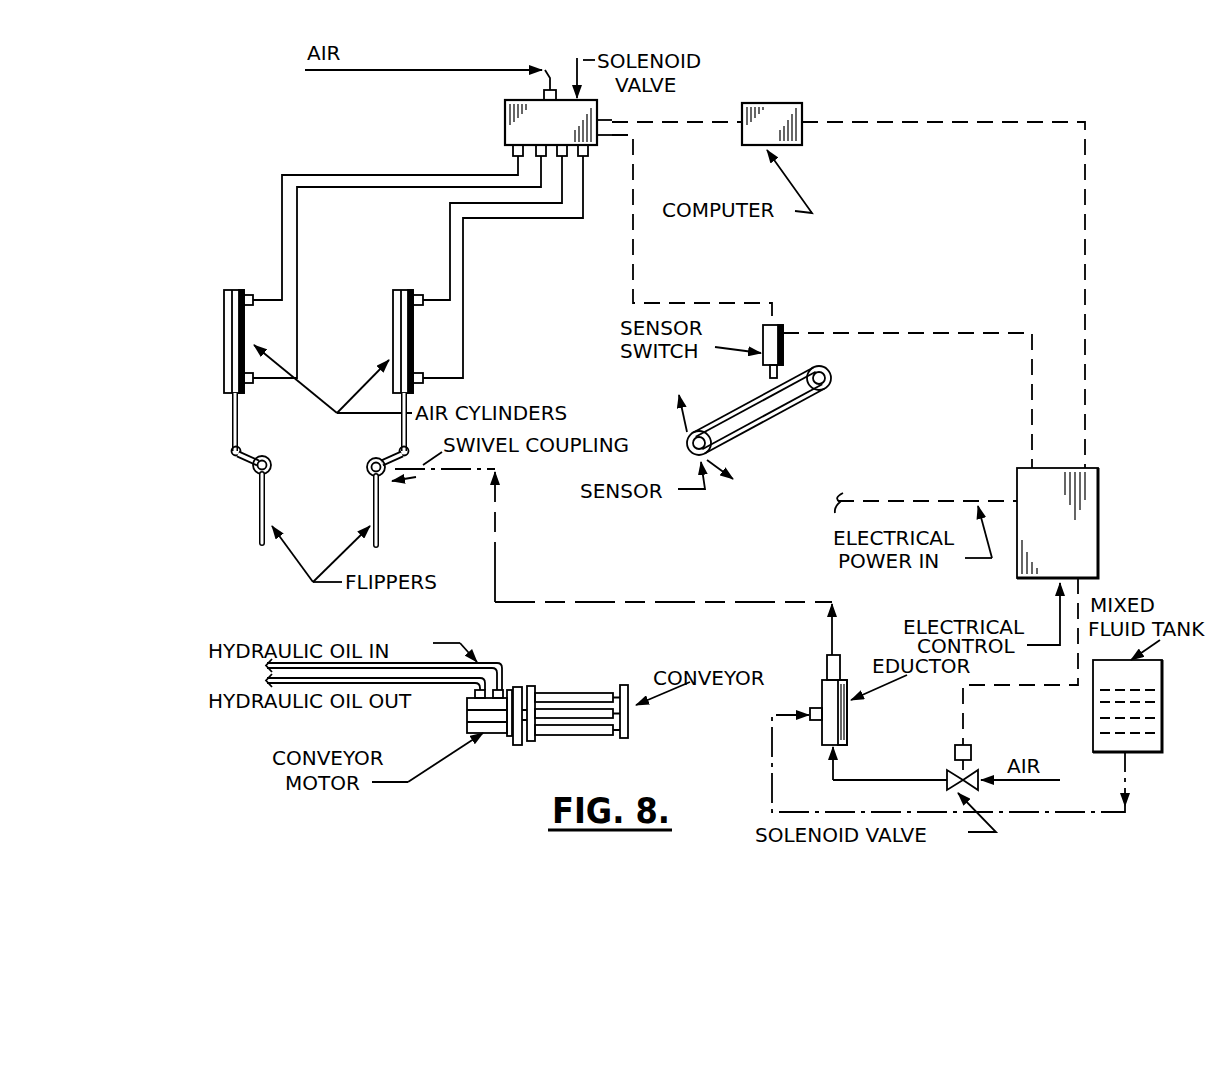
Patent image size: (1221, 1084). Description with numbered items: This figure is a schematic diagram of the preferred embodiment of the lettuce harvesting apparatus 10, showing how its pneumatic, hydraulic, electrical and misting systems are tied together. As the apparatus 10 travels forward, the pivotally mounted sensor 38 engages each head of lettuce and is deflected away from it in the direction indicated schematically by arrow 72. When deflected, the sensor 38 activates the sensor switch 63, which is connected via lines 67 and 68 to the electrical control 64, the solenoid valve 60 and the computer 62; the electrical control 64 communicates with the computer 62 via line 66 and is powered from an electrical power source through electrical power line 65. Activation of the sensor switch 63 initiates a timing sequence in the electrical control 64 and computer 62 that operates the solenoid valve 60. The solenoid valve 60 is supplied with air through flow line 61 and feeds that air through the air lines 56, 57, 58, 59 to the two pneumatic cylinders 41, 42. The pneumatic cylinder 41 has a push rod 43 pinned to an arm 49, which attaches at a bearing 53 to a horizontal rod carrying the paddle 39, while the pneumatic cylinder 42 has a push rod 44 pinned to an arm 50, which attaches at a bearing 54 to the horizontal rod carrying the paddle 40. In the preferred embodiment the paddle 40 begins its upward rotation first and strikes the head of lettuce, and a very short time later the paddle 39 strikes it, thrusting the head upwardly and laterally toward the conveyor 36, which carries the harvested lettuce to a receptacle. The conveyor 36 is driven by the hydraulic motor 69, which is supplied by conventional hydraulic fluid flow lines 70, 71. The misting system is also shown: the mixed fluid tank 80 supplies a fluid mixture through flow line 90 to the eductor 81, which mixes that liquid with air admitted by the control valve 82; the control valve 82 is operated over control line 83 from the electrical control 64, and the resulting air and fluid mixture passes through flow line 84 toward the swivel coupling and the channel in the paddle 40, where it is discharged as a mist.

The harvester apparatus 10 is at (991, 97).
The conveyor 36 is at (630, 728).
The sensor 38 is at (770, 425).
The paddle 39 is at (259, 515).
The paddle 40 is at (380, 510).
The pneumatic cylinder 41 is at (224, 358).
The pneumatic cylinder 42 is at (393, 305).
The push rod 43 is at (233, 415).
The push rod 44 is at (401, 420).
The arm 49 is at (257, 458).
The arm 50 is at (368, 462).
The bearing 53 is at (256, 473).
The bearing 54 is at (372, 480).
The air line 56 is at (282, 235).
The air line 57 is at (297, 265).
The air line 58 is at (450, 250).
The air line 59 is at (465, 255).
The solenoid valve 60 is at (505, 115).
The flow line 61 is at (497, 68).
The computer 62 is at (778, 108).
The sensor switch 63 is at (782, 323).
The electrical control 64 is at (1098, 540).
The electrical power line 65 is at (945, 500).
The line 66 is at (1088, 296).
The line 67 is at (958, 333).
The line 68 is at (640, 300).
The hydraulic motor 69 is at (490, 735).
The hydraulic fluid flow line 70 is at (492, 663).
The hydraulic fluid flow line 71 is at (267, 681).
The arrow 72 is at (672, 430).
The mixed fluid tank 80 is at (1162, 720).
The eductor 81 is at (848, 728).
The control valve 82 is at (971, 750).
The control line 83 is at (1044, 685).
The flow line 84 is at (690, 602).
The flow line 90 is at (1088, 814).